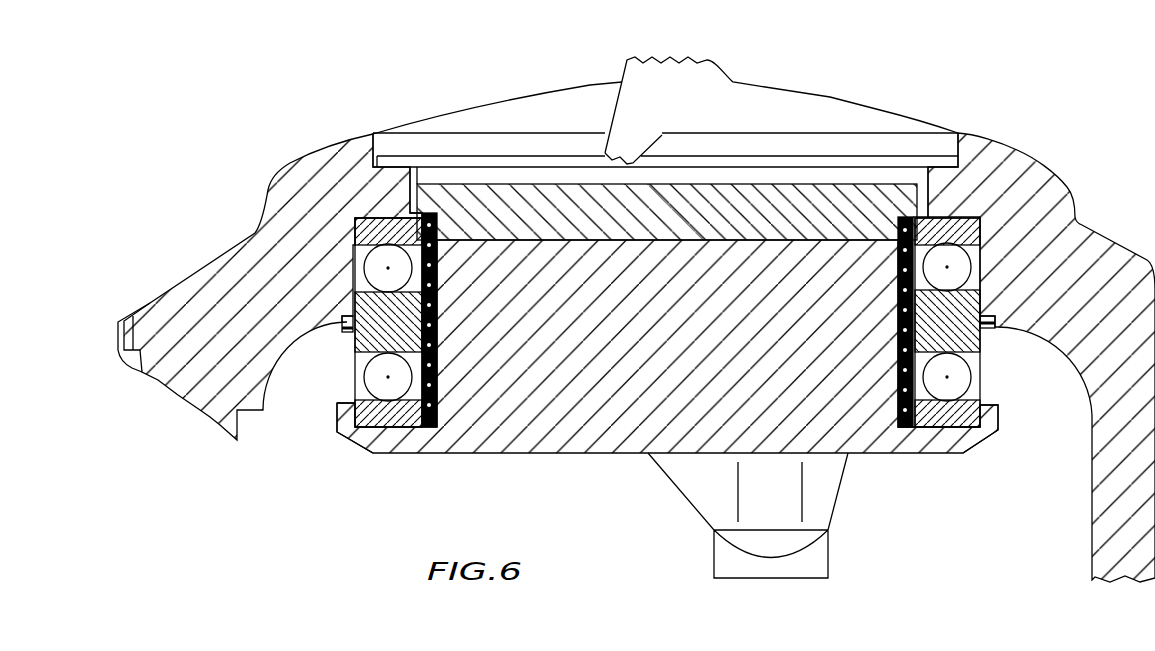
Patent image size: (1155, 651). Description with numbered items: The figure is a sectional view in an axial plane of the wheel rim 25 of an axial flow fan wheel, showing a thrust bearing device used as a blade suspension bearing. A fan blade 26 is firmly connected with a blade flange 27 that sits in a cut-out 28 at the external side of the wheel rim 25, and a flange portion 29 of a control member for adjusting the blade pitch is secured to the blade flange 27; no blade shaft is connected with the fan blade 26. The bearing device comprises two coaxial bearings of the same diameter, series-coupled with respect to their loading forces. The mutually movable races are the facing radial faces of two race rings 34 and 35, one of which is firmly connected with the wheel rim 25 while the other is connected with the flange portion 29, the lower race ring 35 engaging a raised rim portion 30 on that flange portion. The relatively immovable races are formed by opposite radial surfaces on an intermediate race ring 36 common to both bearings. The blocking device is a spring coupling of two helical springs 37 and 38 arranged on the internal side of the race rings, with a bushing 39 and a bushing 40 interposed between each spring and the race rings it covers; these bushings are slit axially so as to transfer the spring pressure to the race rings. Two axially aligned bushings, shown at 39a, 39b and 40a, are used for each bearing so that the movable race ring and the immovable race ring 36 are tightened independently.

The wheel rim 25 is at (1097, 243).
The fan blade 26 is at (752, 96).
The blade flange 27 is at (425, 202).
The cut-out 28 is at (412, 177).
The flange portion 29 is at (468, 445).
The raised rim portion 30 is at (993, 407).
The race ring 34 is at (353, 227).
The race ring 35 is at (338, 422).
The intermediate race ring 36 is at (358, 342).
The helical spring 37 is at (955, 212).
The helical spring 38 is at (903, 432).
The bushing 39 is at (369, 304).
The bushing 39a is at (983, 228).
The bushing 39b is at (935, 315).
The bushing 40 is at (413, 390).
The bushing 40a is at (938, 358).